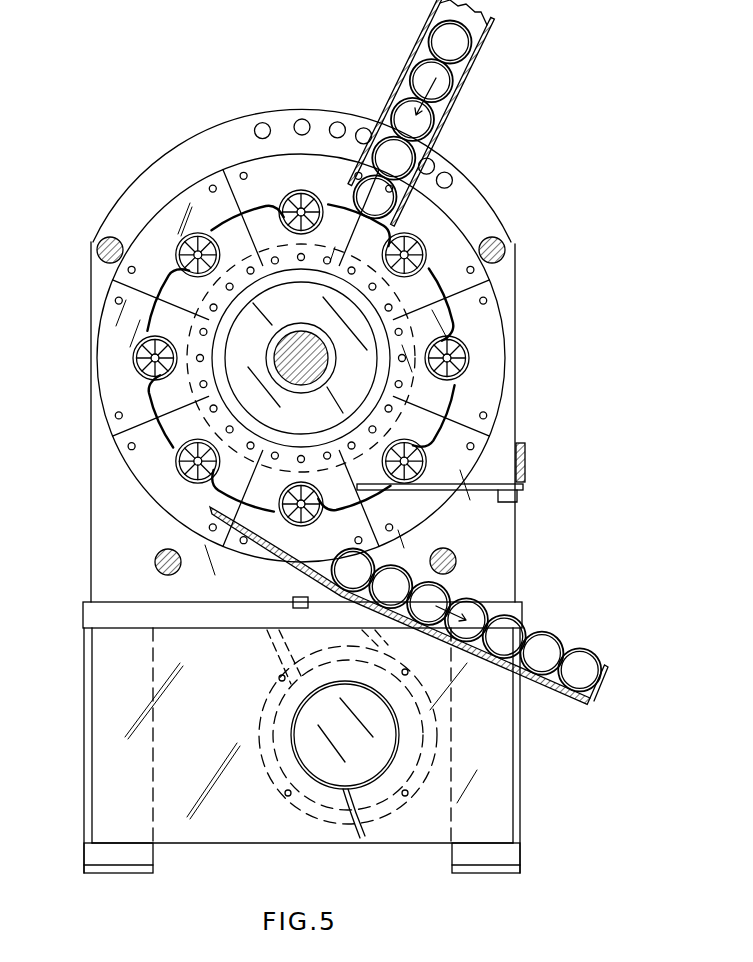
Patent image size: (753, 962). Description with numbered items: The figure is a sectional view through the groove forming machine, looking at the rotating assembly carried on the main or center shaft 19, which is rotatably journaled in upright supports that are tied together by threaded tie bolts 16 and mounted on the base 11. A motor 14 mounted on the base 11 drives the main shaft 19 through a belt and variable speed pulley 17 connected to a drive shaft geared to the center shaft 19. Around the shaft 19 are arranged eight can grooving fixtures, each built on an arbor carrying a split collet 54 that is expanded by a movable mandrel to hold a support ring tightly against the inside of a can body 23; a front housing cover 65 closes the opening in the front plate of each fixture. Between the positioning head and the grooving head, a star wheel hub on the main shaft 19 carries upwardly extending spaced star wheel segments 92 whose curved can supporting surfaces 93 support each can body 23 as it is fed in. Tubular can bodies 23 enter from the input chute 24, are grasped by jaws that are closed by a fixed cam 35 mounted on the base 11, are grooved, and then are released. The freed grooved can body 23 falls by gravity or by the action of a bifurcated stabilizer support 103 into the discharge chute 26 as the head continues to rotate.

The base 11 is at (216, 621).
The motor 14 is at (350, 726).
The tie bolts 16 is at (98, 245).
The belt and variable speed pulley 17 is at (275, 655).
The main shaft 19 is at (298, 387).
The can body 23 is at (418, 70).
The input chute 24 is at (458, 83).
The discharge chute 26 is at (583, 695).
The fixed cam 35 is at (91, 513).
The split collet 54 is at (210, 253).
The front housing cover 65 is at (291, 172).
The star wheel segments 92 is at (328, 204).
The can supporting surfaces 93 is at (390, 262).
The bifurcated stabilizer support 103 is at (517, 500).